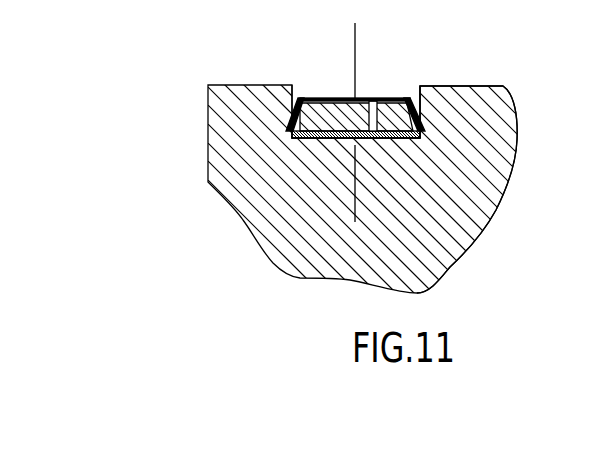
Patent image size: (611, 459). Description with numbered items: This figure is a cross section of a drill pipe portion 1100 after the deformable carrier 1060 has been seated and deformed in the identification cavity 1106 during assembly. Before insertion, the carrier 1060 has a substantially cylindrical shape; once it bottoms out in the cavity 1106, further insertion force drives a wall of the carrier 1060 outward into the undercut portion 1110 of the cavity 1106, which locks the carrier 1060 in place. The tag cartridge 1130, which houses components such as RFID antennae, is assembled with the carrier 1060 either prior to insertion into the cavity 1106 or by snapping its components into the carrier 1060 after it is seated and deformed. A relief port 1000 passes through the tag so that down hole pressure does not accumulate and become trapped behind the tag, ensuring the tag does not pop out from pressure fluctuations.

The housing block 1100 is at (238, 85).
The identification cavity 1106 is at (301, 91).
The relief port 1000 is at (362, 100).
The tag cartridge 1130 is at (387, 107).
The undercut portion 1110 is at (406, 100).
The deformable carrier 1060 is at (436, 156).